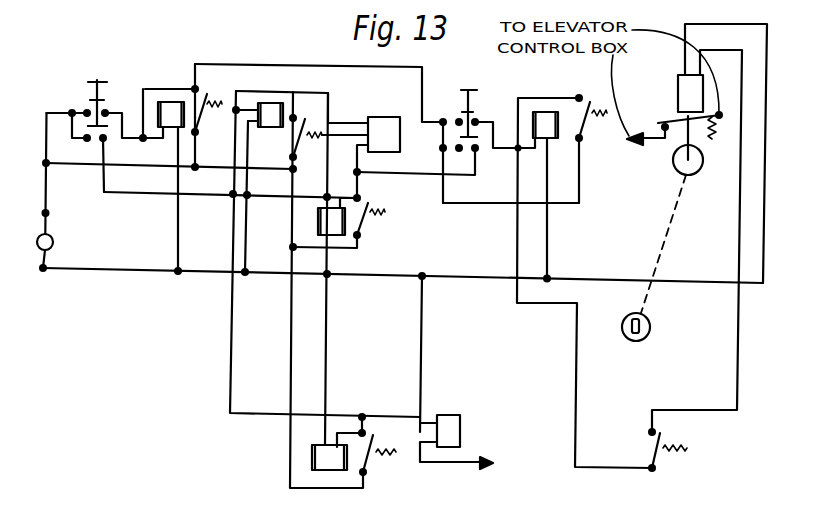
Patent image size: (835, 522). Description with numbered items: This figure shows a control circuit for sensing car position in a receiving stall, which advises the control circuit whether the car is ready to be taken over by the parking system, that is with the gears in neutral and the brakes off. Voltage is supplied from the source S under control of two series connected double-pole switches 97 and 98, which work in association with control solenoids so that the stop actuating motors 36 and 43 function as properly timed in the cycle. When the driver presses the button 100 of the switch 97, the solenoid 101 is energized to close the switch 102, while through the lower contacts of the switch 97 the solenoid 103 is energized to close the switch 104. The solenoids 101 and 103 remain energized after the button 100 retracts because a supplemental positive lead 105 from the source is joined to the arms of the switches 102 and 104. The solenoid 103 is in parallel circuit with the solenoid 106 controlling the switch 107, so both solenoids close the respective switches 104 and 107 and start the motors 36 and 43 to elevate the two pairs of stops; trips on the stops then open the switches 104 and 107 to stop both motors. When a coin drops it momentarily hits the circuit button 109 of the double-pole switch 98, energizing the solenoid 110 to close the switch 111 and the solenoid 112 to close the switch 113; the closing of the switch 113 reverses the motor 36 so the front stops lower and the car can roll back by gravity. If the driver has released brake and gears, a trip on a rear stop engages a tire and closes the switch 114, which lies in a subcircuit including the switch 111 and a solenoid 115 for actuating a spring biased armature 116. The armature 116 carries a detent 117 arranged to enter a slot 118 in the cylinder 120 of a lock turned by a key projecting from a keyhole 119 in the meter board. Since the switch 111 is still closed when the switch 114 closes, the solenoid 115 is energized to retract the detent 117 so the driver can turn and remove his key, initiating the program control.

The source S is at (60, 244).
The stop actuating motor 36 is at (384, 134).
The stop actuating motor 43 is at (452, 425).
The double-pole switch 97 is at (103, 103).
The double-pole switch 98 is at (478, 112).
The button 100 is at (110, 65).
The solenoid 101 is at (175, 112).
The switch 102 is at (207, 97).
The solenoid 103 is at (268, 112).
The switch 104 is at (307, 127).
The supplemental positive lead 105 is at (88, 168).
The solenoid 106 is at (332, 463).
The switch 107 is at (368, 467).
The circuit button 109 is at (482, 80).
The solenoid 110 is at (545, 120).
The switch 111 is at (593, 128).
The solenoid 112 is at (333, 227).
The switch 113 is at (367, 223).
The switch 114 is at (663, 430).
The solenoid 115 is at (690, 87).
The spring biased armature 116 is at (670, 118).
The detent 117 is at (688, 135).
The slot 118 is at (680, 167).
The keyhole 119 is at (622, 332).
The cylinder 120 is at (693, 170).